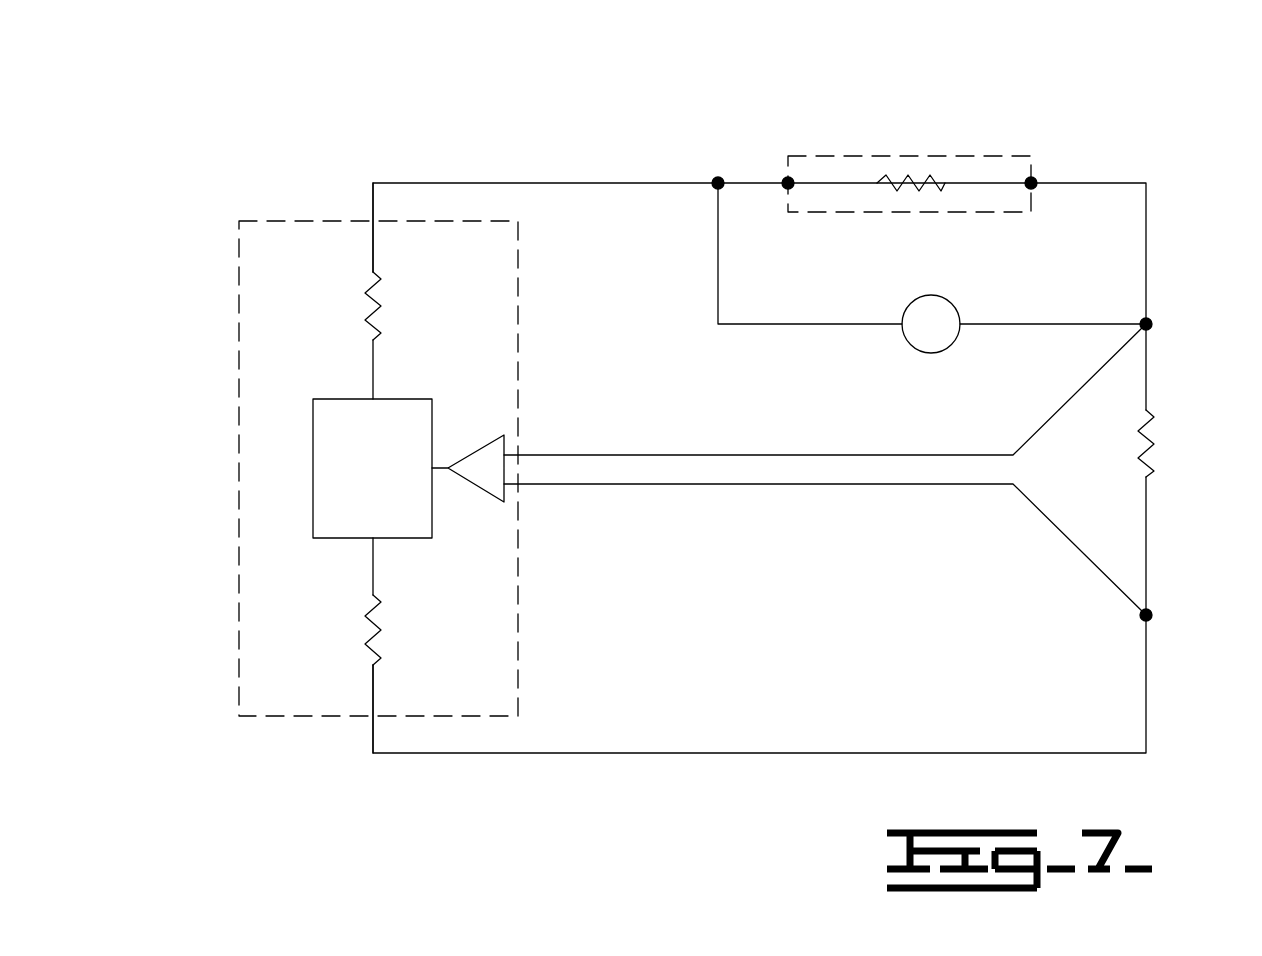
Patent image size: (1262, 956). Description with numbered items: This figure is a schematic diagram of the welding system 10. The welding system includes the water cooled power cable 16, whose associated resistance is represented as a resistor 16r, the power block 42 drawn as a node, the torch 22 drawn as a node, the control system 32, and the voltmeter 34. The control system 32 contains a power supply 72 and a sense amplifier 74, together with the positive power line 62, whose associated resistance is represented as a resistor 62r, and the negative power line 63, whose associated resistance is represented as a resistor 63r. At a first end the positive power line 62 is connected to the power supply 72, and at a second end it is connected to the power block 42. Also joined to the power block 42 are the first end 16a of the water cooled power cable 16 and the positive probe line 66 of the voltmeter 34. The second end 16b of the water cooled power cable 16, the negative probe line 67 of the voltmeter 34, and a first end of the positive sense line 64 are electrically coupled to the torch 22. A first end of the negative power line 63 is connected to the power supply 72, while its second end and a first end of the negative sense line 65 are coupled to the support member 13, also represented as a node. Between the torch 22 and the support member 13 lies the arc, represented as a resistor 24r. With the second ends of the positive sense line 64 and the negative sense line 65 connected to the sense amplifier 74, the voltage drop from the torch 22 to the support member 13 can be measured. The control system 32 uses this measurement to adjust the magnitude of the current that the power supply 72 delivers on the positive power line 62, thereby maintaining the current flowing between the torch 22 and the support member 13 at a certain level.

The welding system 10 is at (570, 765).
The support member 13 is at (1146, 615).
The water cooled power cable 16 is at (828, 156).
The first end of the water cooled power cable 16a is at (788, 183).
The second end of the water cooled power cable 16b is at (1031, 183).
The resistor 16r is at (915, 183).
The torch 22 is at (1146, 324).
The resistor 24r is at (1146, 445).
The control system 32 is at (239, 368).
The voltmeter 34 is at (908, 345).
The power block 42 is at (718, 183).
The positive power line 62 is at (373, 245).
The resistor 62r is at (373, 310).
The negative power line 63 is at (373, 690).
The resistor 63r is at (373, 628).
The positive sense line 64 is at (718, 455).
The negative sense line 65 is at (718, 484).
The positive probe line 66 is at (718, 255).
The negative probe line 67 is at (1027, 324).
The power supply 72 is at (345, 399).
The sense amplifier 74 is at (473, 448).